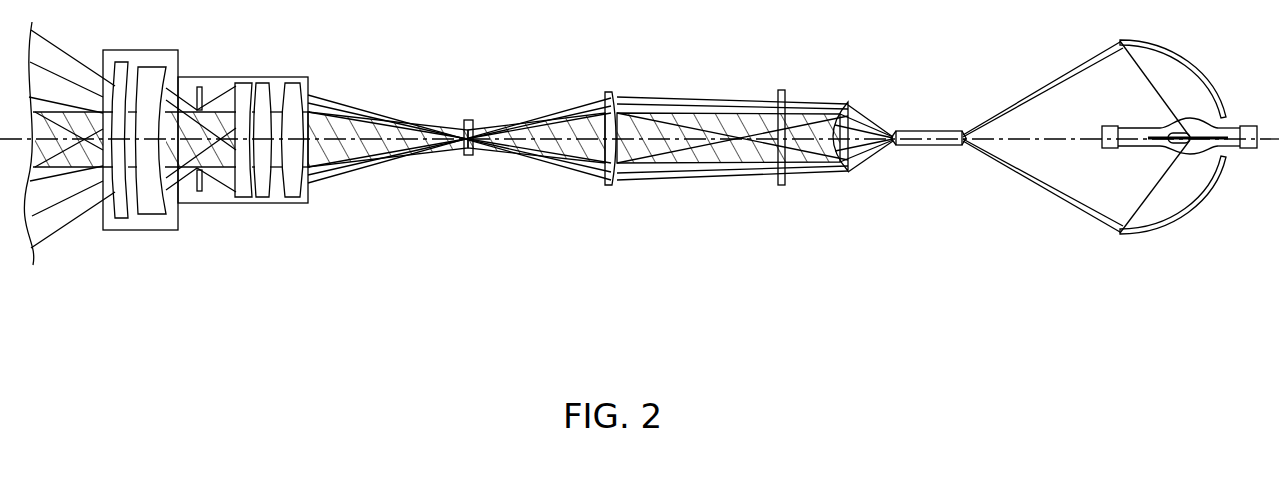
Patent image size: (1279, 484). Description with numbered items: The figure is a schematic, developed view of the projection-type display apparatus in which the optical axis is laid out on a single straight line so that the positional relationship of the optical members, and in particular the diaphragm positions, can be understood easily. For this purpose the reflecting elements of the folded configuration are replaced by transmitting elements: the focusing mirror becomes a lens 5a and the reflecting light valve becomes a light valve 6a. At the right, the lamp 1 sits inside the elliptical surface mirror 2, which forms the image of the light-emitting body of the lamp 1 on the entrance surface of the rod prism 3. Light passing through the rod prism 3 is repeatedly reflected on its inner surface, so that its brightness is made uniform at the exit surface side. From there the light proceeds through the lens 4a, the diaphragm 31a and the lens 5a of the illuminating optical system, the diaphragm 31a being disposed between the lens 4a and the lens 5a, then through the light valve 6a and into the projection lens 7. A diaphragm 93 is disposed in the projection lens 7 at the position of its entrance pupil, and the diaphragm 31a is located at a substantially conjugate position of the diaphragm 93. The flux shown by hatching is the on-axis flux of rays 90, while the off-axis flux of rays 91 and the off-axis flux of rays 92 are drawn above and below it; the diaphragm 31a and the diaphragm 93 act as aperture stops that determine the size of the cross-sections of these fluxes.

The lamp 1 is at (1205, 117).
The elliptical surface mirror 2 is at (1178, 225).
The rod prism 3 is at (927, 147).
The lens 4a is at (846, 173).
The diaphragm 31a is at (781, 188).
The lens 5a is at (612, 187).
The light valve 6a is at (467, 158).
The projection lens 7 is at (175, 233).
The on-axis flux of rays 90 is at (392, 120).
The off-axis flux of rays 91 is at (345, 108).
The off-axis flux of rays 92 is at (372, 164).
The diaphragm 93 is at (200, 87).